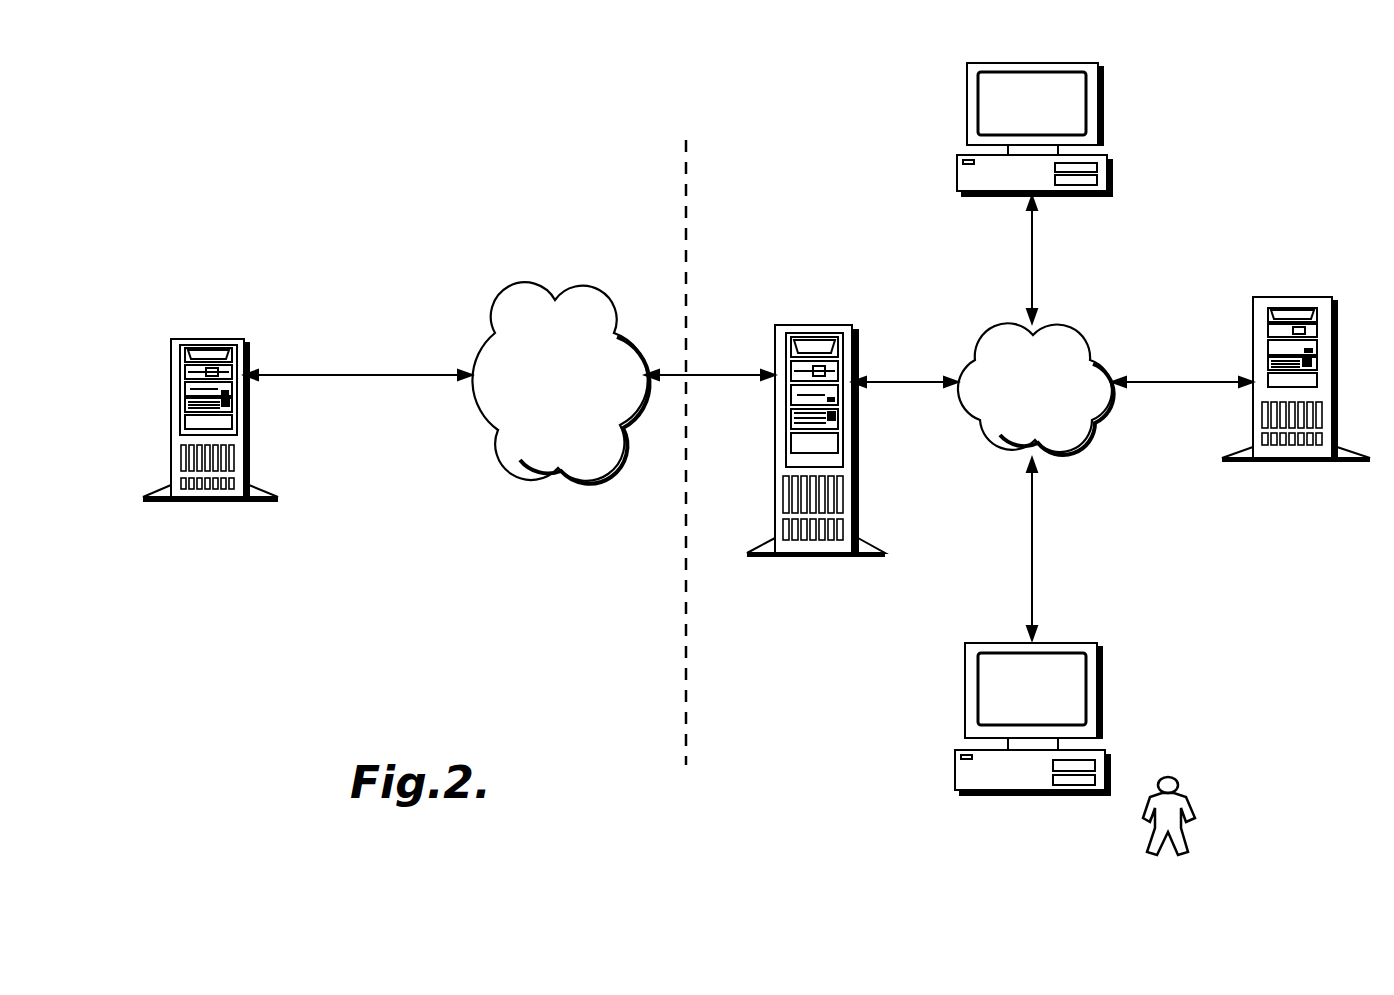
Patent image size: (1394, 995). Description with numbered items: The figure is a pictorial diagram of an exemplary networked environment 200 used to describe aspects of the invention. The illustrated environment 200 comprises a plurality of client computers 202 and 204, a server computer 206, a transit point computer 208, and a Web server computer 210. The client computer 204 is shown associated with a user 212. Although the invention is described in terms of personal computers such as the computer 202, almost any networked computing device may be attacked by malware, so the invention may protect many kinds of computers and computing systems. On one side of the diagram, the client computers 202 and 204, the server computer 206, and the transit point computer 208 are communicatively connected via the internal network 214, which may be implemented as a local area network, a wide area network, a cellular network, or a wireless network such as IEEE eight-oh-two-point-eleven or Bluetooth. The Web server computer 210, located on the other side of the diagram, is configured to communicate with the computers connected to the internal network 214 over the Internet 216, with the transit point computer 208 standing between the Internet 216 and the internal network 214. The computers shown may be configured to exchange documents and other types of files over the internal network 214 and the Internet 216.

The networked environment 200 is at (1250, 98).
The client computer 202 is at (970, 108).
The client computer 204 is at (970, 677).
The server computer 206 is at (1268, 462).
The transit point computer 208 is at (787, 486).
The Web server computer 210 is at (175, 432).
The user 212 is at (1195, 818).
The internal network 214 is at (997, 440).
The Internet 216 is at (527, 460).